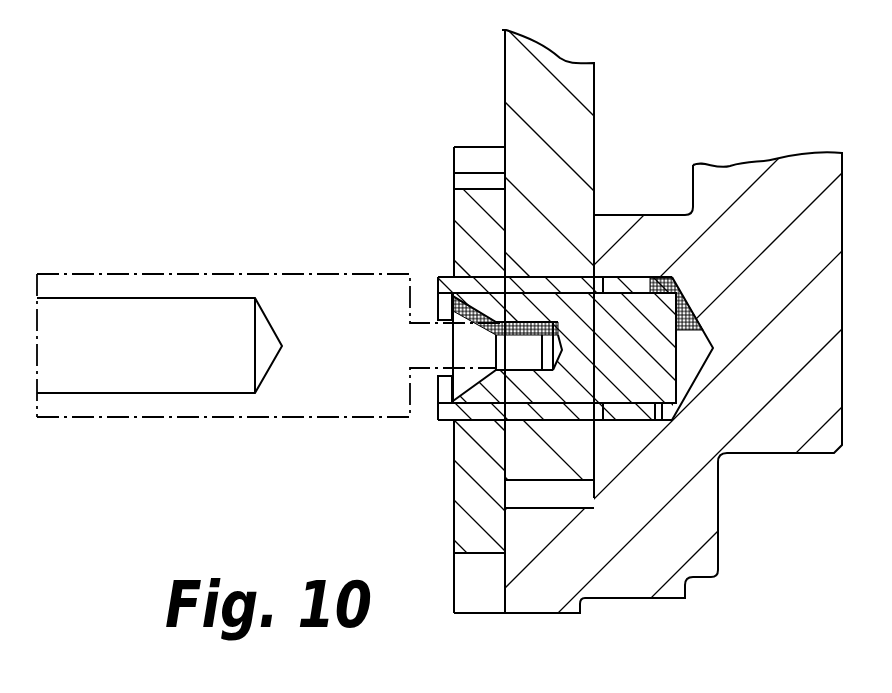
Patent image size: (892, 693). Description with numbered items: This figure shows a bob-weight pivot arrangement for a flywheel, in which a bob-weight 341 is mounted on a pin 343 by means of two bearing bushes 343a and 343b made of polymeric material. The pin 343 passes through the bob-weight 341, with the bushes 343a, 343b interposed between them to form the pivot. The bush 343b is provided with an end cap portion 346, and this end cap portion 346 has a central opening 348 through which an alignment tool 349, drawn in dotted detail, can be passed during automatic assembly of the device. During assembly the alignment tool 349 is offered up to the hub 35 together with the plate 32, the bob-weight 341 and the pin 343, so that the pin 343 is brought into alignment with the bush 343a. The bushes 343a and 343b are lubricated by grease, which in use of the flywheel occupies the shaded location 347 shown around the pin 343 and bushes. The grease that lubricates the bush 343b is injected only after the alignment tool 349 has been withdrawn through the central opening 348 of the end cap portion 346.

The plate 32 is at (475, 533).
The hub 35 is at (808, 238).
The bob-weight 341 is at (537, 98).
The pin 343 is at (655, 368).
The bearing bush 343a is at (628, 408).
The bearing bush 343b is at (460, 285).
The end cap portion 346 is at (440, 300).
The grease location 347 is at (537, 325).
The central opening 348 is at (447, 362).
The alignment tool 349 is at (175, 274).